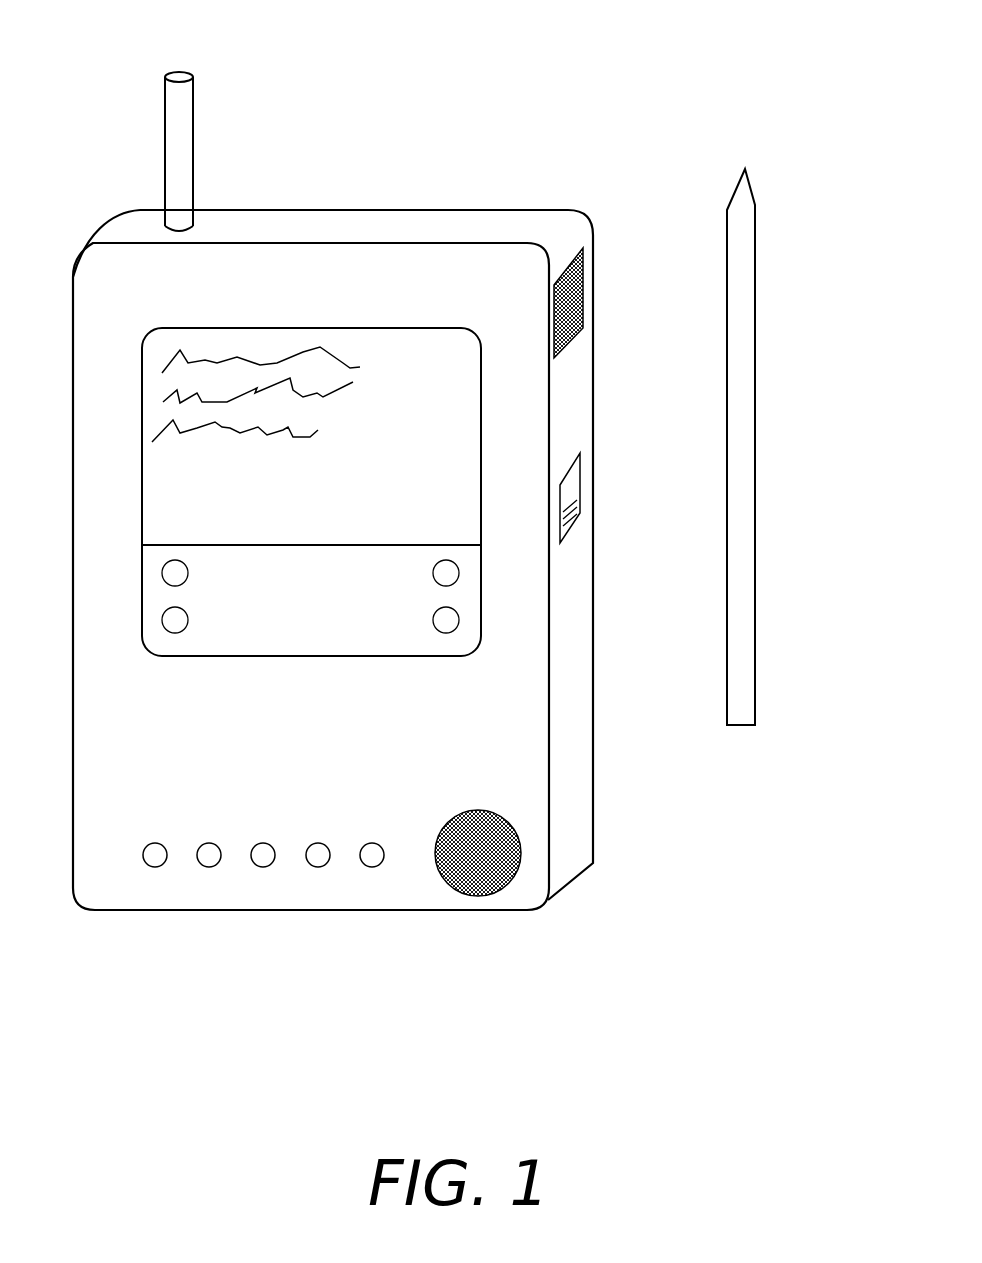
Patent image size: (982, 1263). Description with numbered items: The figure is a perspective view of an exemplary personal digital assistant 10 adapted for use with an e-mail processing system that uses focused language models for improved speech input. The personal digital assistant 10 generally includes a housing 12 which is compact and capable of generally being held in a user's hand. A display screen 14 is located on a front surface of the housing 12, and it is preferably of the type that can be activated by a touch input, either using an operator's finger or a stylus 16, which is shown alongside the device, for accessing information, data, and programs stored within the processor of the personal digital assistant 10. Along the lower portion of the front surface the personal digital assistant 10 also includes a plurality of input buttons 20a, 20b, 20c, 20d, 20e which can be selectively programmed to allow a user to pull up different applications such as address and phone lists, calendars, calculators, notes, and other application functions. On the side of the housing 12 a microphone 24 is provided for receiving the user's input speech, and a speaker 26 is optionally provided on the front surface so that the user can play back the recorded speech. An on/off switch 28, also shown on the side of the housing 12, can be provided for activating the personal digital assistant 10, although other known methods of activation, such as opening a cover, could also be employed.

The personal digital assistant 10 is at (774, 89).
The housing 12 is at (225, 262).
The display screen 14 is at (444, 347).
The stylus 16 is at (745, 313).
The input button 20a is at (143, 865).
The input button 20b is at (205, 865).
The input button 20c is at (259, 867).
The input button 20d is at (317, 868).
The input button 20e is at (365, 867).
The microphone 24 is at (582, 293).
The speaker 26 is at (460, 815).
The on/off switch 28 is at (582, 485).